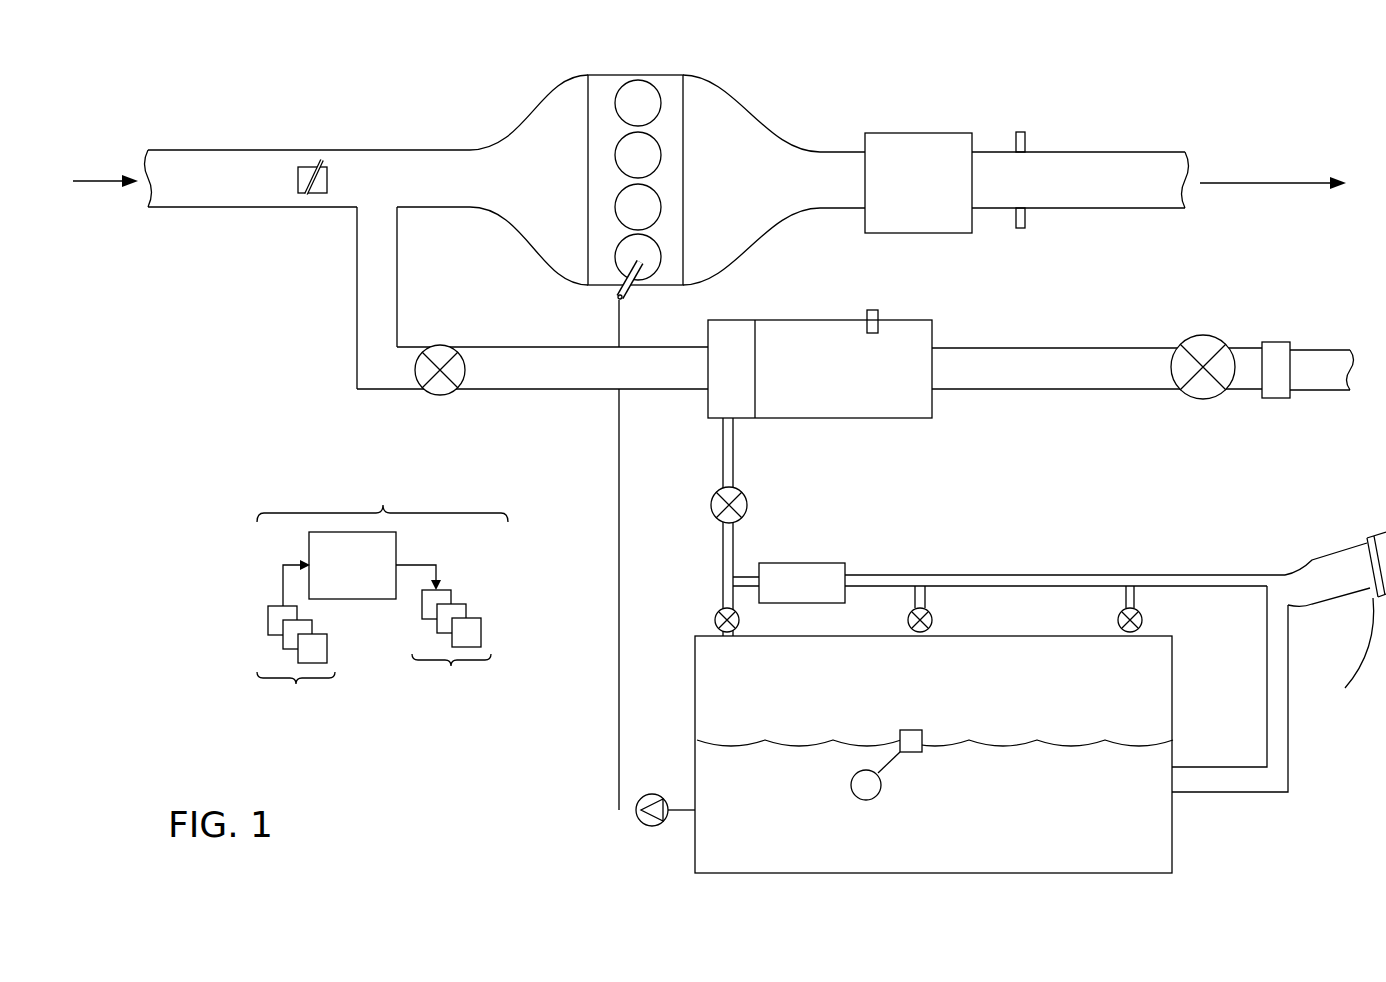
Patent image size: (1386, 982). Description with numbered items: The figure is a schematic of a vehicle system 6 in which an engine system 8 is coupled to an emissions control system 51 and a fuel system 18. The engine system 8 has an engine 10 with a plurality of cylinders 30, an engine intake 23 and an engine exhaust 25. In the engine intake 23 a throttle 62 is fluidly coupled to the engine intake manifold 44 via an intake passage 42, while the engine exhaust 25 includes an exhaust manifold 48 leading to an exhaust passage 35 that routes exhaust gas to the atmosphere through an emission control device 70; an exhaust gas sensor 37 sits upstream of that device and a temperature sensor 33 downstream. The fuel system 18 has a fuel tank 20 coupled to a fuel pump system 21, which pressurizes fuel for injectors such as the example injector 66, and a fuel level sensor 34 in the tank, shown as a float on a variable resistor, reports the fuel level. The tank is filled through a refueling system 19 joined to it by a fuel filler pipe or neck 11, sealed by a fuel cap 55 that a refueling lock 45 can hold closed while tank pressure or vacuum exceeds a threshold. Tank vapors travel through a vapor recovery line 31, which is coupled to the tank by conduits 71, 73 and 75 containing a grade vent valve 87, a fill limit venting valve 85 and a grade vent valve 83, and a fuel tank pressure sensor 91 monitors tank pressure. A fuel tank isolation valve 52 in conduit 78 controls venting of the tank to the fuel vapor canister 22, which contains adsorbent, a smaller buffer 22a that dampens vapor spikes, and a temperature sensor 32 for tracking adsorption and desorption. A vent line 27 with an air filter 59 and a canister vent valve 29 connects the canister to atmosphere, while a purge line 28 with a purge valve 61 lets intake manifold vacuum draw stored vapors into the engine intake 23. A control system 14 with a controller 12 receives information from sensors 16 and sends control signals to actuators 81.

The vehicle system 6 is at (158, 72).
The engine system 8 is at (992, 66).
The engine 10 is at (649, 180).
The fuel filler pipe or neck 11 is at (1290, 684).
The controller 12 is at (352, 565).
The control system 14 is at (382, 592).
The sensors 16 is at (296, 641).
The fuel system 18 is at (1228, 840).
The fuel filler system / refueling system 19 is at (1340, 528).
The fuel tank 20 is at (1172, 741).
The fuel pump system 21 is at (654, 794).
The fuel vapor canister 22 is at (835, 352).
The buffer 22a is at (728, 320).
The engine intake 23 is at (512, 98).
The engine exhaust 25 is at (862, 78).
The vent line 27 is at (1042, 378).
The purge line 28 is at (555, 380).
The canister vent valve 29 is at (1198, 338).
The cylinders 30 is at (661, 108).
The vapor recovery line 31 is at (1190, 575).
The temperature sensor 32 is at (868, 310).
The temperature sensor 33 is at (1015, 220).
The fuel level sensor 34 is at (915, 730).
The exhaust passage 35 is at (1139, 152).
The exhaust gas sensor 37 is at (1015, 140).
The intake passage 42 is at (346, 209).
The engine intake manifold 44 is at (542, 191).
The refueling lock 45 is at (1346, 688).
The exhaust manifold 48 is at (765, 191).
The emissions control system 51 is at (1345, 290).
The fuel tank isolation valve (FTIV) 52 is at (718, 518).
The fuel cap 55 is at (1372, 536).
The air filter 59 is at (1282, 342).
The purge valve 61 is at (446, 346).
The throttle 62 is at (327, 186).
The fuel injector 66 is at (627, 287).
The emission control device 70 is at (905, 133).
The conduit 71 is at (737, 598).
The conduit 73 is at (912, 596).
The conduit 75 is at (1122, 596).
The conduit 78 is at (722, 452).
The actuators 81 is at (443, 635).
The grade vent valve (GVV) 83 is at (1143, 621).
The fill limit venting valve (FLVV) 85 is at (934, 621).
The grade vent valve (GVV) 87 is at (714, 620).
The pressure sensor (fuel tank pressure transducer, FTPT) 91 is at (846, 572).